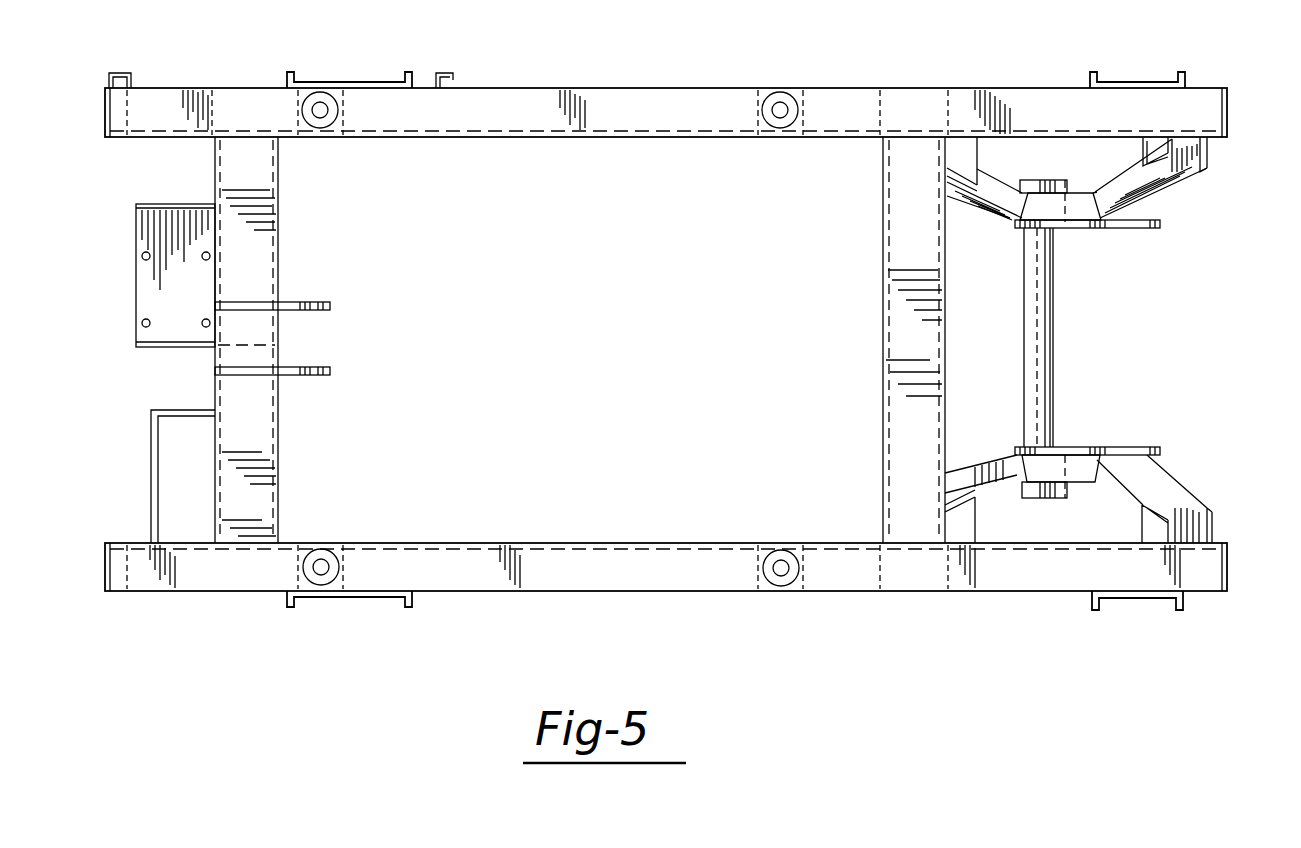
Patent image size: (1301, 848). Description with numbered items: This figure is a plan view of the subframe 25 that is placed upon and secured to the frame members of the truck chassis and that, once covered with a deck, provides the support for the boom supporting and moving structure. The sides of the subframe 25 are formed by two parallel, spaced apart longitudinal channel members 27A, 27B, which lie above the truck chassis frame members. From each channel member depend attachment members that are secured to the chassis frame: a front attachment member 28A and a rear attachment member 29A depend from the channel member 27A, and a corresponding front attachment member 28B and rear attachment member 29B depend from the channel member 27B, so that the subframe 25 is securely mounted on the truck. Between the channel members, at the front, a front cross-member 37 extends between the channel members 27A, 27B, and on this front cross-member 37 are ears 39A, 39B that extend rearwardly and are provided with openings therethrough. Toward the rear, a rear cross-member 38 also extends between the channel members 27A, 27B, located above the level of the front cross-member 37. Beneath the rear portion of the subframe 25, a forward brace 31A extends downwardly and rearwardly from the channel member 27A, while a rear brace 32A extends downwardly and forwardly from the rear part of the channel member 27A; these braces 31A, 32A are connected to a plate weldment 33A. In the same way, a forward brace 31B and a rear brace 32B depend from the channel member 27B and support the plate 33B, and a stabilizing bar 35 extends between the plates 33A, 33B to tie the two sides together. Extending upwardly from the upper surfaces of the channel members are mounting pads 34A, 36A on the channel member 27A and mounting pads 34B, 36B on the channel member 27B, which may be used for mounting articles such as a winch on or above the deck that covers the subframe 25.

The subframe 25 is at (1280, 97).
The longitudinal channel member 27A is at (905, 575).
The longitudinal channel member 27B is at (888, 100).
The front attachment member 28A is at (405, 605).
The front attachment member 28B is at (287, 78).
The rear attachment member 29A is at (1088, 602).
The rear attachment member 29B is at (1090, 80).
The forward brace 31A is at (1000, 418).
The forward brace 31B is at (985, 205).
The rear brace 32A is at (1155, 487).
The rear brace 32B is at (1190, 185).
The plate weldment 33A is at (1075, 446).
The plate weldment 33B is at (1080, 228).
The mounting pad 34A is at (322, 549).
The mounting pad 34B is at (318, 126).
The stabilizing bar 35 is at (1040, 355).
The mounting pad 36A is at (781, 550).
The mounting pad 36B is at (780, 126).
The front cross-member 37 is at (268, 190).
The rear cross-member 38 is at (880, 345).
The ear 39A is at (295, 376).
The ear 39B is at (300, 302).